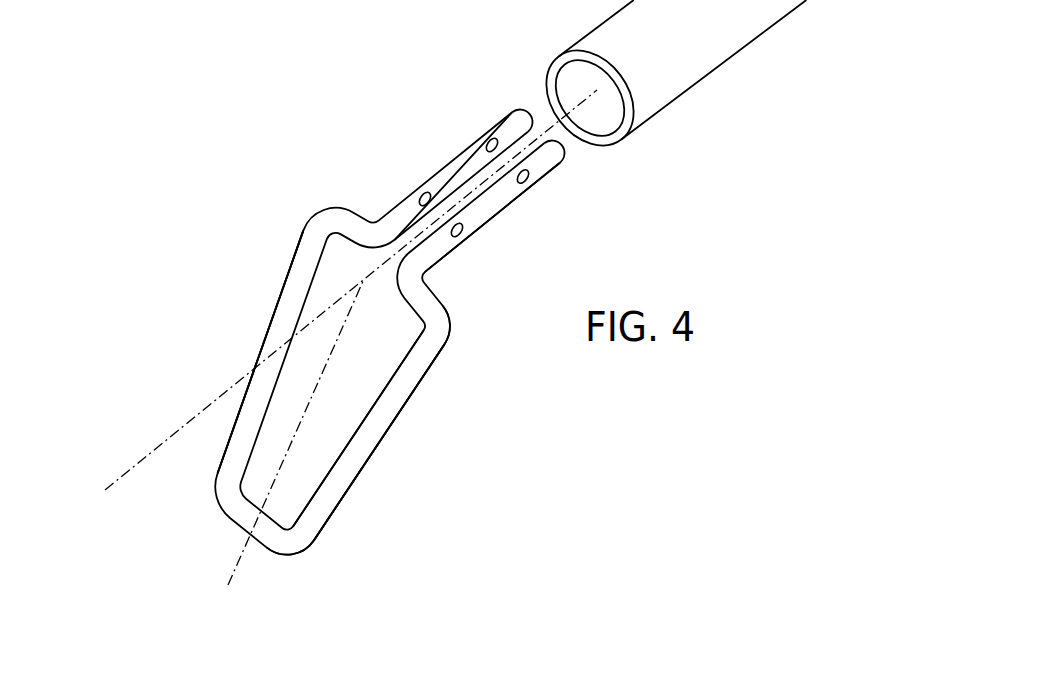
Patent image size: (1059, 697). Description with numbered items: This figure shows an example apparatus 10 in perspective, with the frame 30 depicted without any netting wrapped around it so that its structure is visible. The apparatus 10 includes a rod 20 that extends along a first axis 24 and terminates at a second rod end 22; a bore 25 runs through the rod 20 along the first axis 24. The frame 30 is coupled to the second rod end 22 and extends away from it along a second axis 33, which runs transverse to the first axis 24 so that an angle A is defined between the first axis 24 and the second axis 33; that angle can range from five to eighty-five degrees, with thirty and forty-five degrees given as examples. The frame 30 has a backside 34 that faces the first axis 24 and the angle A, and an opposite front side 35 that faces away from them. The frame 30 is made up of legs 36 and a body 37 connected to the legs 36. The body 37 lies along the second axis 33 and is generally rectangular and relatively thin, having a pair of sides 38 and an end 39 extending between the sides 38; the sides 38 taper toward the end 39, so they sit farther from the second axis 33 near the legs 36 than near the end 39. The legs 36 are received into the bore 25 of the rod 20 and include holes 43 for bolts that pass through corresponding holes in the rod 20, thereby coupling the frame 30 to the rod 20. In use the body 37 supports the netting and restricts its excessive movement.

The apparatus 10 is at (420, 118).
The rod 20 is at (657, 89).
The second rod end 22 is at (643, 144).
The first axis 24 is at (163, 443).
The bore 25 is at (580, 79).
The frame 30 is at (450, 336).
The second axis 33 is at (231, 583).
The backside 34 is at (238, 318).
The front side 35 is at (445, 432).
The legs 36 is at (444, 167).
The body 37 is at (352, 478).
The sides 38 is at (288, 297).
The end 39 is at (286, 556).
The holes 43 is at (484, 137).
The angle A is at (226, 571).